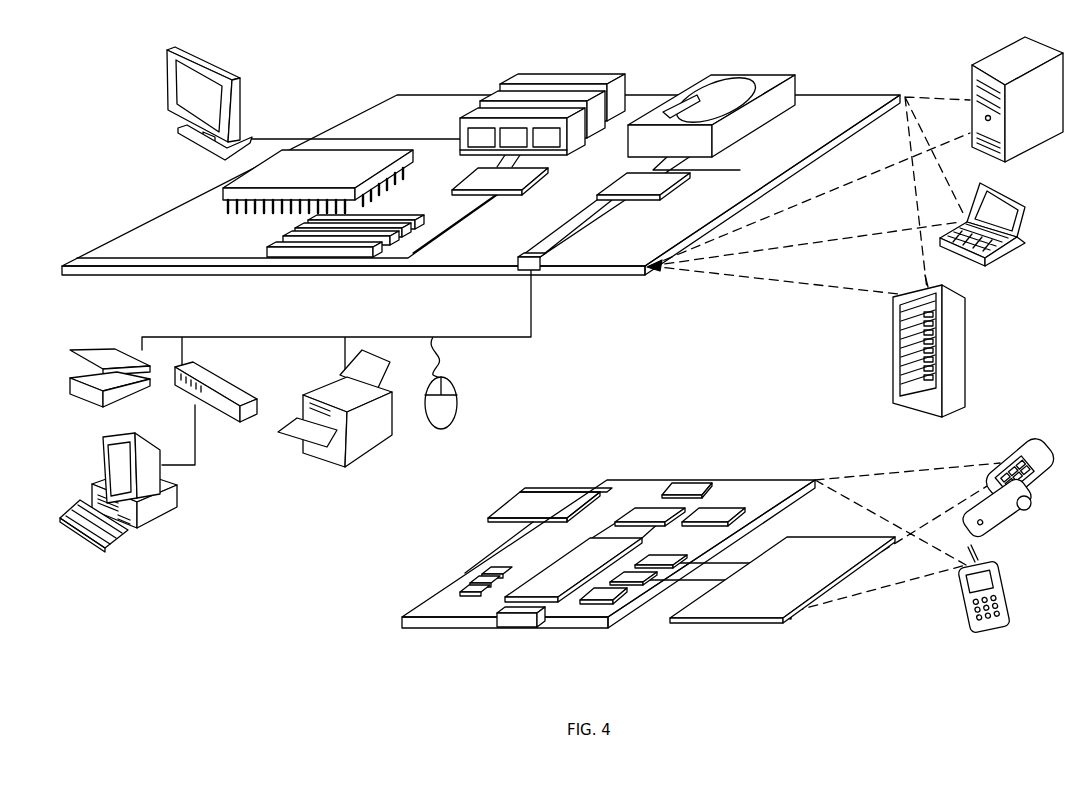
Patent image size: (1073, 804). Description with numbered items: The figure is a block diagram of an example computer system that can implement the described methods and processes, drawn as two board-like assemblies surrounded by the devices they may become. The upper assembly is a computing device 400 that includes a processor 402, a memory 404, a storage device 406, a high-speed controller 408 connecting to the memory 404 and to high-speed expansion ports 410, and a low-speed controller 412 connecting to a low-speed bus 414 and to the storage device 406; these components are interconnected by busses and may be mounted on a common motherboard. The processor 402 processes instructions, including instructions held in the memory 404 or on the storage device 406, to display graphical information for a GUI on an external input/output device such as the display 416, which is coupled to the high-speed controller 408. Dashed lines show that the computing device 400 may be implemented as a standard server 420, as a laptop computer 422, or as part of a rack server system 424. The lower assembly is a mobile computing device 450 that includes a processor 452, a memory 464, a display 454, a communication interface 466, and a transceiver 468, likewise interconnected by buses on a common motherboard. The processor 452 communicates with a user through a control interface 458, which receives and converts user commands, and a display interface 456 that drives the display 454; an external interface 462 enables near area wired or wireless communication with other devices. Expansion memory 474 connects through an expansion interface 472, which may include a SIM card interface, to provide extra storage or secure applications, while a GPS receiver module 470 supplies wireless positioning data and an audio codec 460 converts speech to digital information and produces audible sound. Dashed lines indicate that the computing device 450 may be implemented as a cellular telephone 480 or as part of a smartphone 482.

The computing device 400 is at (92, 64).
The processor 402 is at (222, 191).
The memory 404 is at (500, 85).
The storage device 406 is at (708, 75).
The high-speed controller 408 is at (482, 181).
The high-speed expansion ports 410 is at (283, 241).
The low-speed controller 412 is at (626, 176).
The low-speed bus 414 is at (540, 270).
The display 416 is at (167, 52).
The standard server 420 is at (969, 78).
The laptop computer 422 is at (1032, 204).
The rack server system 424 is at (893, 373).
The computing device 450 is at (380, 622).
The processor 452 is at (548, 596).
The display 454 is at (750, 604).
The display interface 456 is at (610, 602).
The control interface 458 is at (640, 584).
The audio codec 460 is at (657, 567).
The external interface 462 is at (520, 628).
The memory 464 is at (487, 588).
The communication interface 466 is at (650, 512).
The transceiver 468 is at (715, 508).
The GPS receiver module 470 is at (695, 484).
The expansion interface 472 is at (583, 490).
The expansion memory 474 is at (520, 492).
The cellular telephone 480 is at (1010, 446).
The smartphone 482 is at (960, 588).